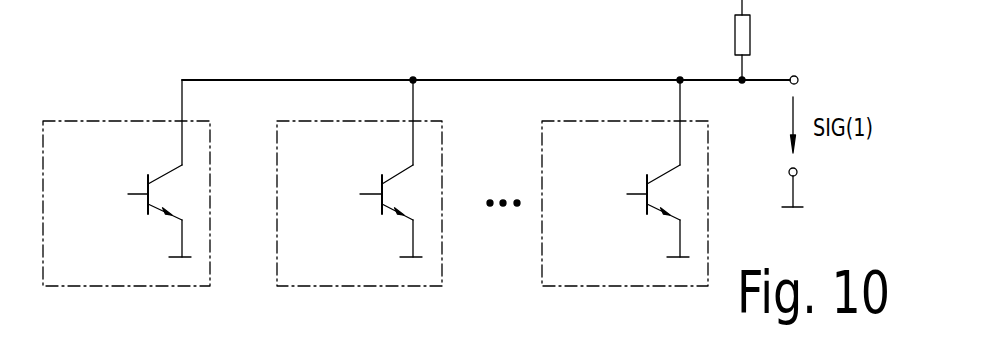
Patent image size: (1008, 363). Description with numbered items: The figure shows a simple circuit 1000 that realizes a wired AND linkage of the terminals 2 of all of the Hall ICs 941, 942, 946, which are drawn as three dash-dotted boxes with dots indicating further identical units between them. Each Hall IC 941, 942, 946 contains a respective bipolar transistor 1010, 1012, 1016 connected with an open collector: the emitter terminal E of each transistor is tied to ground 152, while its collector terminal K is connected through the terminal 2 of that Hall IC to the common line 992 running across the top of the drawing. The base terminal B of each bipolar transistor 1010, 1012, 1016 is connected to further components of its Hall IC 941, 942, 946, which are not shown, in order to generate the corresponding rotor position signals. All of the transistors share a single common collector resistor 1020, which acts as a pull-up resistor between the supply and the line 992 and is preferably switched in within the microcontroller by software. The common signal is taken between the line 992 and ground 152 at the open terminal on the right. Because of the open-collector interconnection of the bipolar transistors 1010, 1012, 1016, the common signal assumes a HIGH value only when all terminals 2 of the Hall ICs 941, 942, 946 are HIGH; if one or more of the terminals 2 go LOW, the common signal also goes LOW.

The circuit 1000 is at (100, 78).
The line 992 is at (466, 80).
The collector resistor 1020 is at (735, 40).
The terminal 2 is at (449, 122).
The bipolar transistor 1010 is at (137, 202).
The bipolar transistor 1012 is at (371, 202).
The bipolar transistor 1016 is at (636, 203).
The ground 152 is at (177, 250).
The Hall IC 941 is at (158, 286).
The Hall IC 942 is at (393, 286).
The Hall IC 946 is at (663, 288).